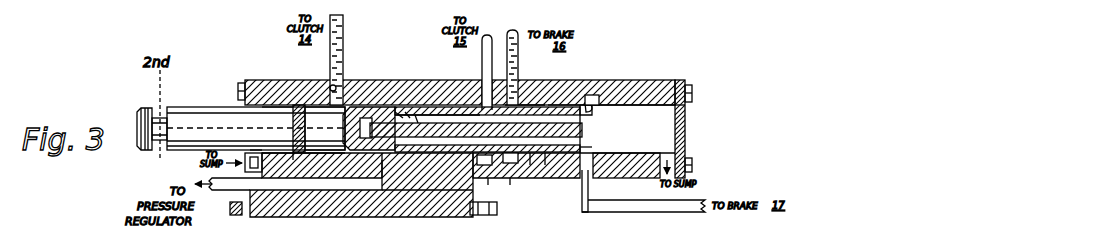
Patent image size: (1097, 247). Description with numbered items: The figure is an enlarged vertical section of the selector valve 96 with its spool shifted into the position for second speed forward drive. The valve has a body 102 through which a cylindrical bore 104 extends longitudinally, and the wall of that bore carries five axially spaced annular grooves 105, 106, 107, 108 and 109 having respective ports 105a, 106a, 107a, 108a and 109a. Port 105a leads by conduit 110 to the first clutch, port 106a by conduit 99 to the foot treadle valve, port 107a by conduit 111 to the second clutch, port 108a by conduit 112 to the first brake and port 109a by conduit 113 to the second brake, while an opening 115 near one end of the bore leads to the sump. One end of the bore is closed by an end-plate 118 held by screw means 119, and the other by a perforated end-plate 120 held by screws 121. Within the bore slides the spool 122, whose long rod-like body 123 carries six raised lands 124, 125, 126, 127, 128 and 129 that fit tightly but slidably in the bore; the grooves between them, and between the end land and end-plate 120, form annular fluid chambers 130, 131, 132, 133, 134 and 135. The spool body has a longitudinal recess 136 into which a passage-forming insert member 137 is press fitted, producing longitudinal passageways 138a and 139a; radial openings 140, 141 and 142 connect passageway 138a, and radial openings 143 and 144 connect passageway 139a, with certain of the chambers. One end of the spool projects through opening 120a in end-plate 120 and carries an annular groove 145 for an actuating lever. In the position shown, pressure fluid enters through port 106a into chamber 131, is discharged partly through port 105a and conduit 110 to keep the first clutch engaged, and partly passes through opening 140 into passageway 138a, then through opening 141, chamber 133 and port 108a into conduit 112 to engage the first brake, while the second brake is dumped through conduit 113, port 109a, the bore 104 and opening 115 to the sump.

The selector valve 96 is at (270, 78).
The conduit 99 is at (230, 198).
The body 102 is at (650, 80).
The cylindrical bore 104 is at (686, 107).
The annular groove 105 is at (335, 160).
The port 105a is at (331, 86).
The annular groove 106 is at (385, 96).
The port 106a is at (388, 170).
The annular groove 107 is at (361, 185).
The port 107a is at (470, 107).
The annular groove 108 is at (510, 186).
The port 108a is at (520, 112).
The annular groove 109 is at (590, 100).
The port 109a is at (588, 210).
The conduit 110 is at (343, 28).
The conduit 111 is at (484, 40).
The conduit 112 is at (519, 30).
The conduit 113 is at (685, 212).
The opening 115 is at (686, 158).
The end-plate 118 is at (686, 117).
The screw means 119 is at (690, 88).
The perforated end-plate 120 is at (240, 100).
The opening 120a is at (255, 152).
The screws 121 is at (240, 83).
The spool 122 is at (135, 146).
The rod-like body 123 is at (183, 150).
The land 124 is at (297, 160).
The land 125 is at (427, 171).
The land 126 is at (526, 176).
The land 127 is at (476, 132).
The land 128 is at (582, 128).
The land 129 is at (582, 147).
The fluid chamber 130 is at (262, 109).
The fluid chamber 131 is at (320, 108).
The fluid chamber 132 is at (417, 129).
The fluid chamber 133 is at (530, 166).
The fluid chamber 134 is at (560, 105).
The fluid chamber 135 is at (545, 166).
The longitudinal recess 136 is at (398, 112).
The insert member 137 is at (595, 113).
The passageway 138a is at (418, 120).
The passageway 139a is at (490, 185).
The radial opening 140 is at (410, 112).
The radial opening 141 is at (515, 105).
The radial opening 142 is at (597, 104).
The radial opening 143 is at (456, 129).
The radial opening 144 is at (265, 153).
The annular groove 145 is at (154, 108).